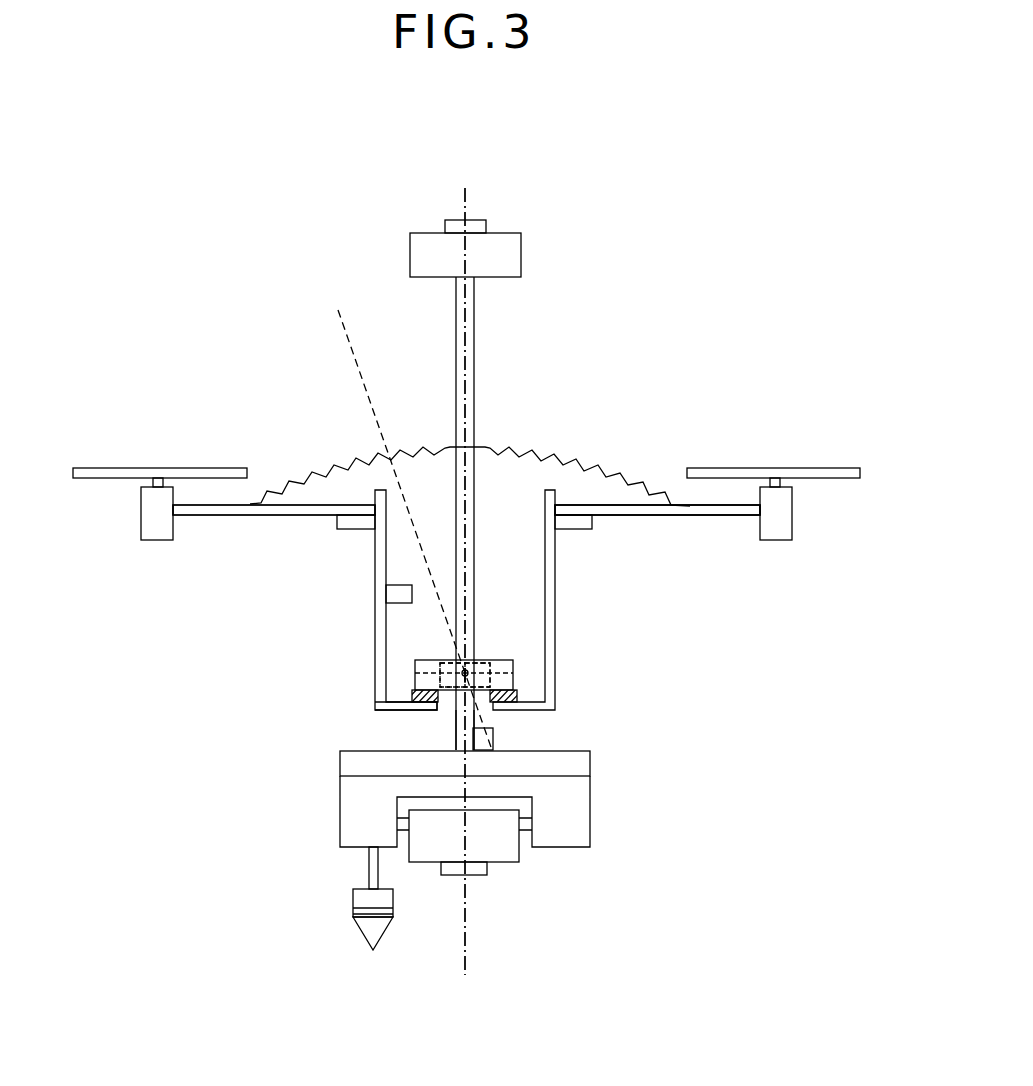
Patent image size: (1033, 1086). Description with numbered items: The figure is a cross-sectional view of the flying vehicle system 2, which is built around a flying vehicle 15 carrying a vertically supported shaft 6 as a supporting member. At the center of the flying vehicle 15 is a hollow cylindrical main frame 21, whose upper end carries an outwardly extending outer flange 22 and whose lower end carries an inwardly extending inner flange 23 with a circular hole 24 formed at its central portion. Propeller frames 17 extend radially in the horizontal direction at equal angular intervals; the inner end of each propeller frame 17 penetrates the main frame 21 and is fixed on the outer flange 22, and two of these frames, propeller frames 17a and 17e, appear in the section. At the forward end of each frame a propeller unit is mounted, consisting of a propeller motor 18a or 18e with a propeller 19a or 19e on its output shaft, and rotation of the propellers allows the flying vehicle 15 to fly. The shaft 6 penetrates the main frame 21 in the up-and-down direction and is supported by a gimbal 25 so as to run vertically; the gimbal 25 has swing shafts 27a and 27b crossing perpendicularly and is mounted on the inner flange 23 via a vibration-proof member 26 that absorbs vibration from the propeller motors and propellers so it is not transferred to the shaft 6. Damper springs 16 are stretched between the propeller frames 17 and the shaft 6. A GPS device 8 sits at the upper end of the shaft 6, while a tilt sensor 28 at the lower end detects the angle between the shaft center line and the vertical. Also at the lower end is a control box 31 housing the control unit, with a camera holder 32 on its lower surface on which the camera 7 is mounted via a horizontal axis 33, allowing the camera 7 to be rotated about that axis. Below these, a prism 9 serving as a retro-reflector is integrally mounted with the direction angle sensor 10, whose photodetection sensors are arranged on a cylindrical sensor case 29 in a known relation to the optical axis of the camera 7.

The flying vehicle system 2 is at (310, 147).
The shaft 6 is at (476, 358).
The camera 7 is at (496, 864).
The GPS device 8 is at (521, 255).
The prism 9 is at (362, 932).
The direction angle sensor 10 is at (352, 900).
The flying vehicle 15 is at (665, 405).
The damper spring 16 is at (330, 472).
The propeller frame 17 is at (730, 517).
The propeller frame 17a is at (220, 516).
The propeller frame 17e is at (681, 518).
The propeller motor 18a is at (160, 541).
The propeller motor 18e is at (792, 517).
The propeller 19a is at (108, 468).
The propeller 19e is at (815, 468).
The main frame 21 is at (555, 625).
The outer flange 22 is at (582, 530).
The inner flange 23 is at (387, 708).
The circular hole 24 is at (445, 712).
The gimbal 25 is at (500, 660).
The vibration-proof member 26 is at (415, 692).
The swing shaft 27a is at (460, 665).
The swing shaft 27b is at (518, 674).
The tilt sensor 28 is at (494, 729).
The sensor case 29 is at (393, 583).
The control box 31 is at (590, 770).
The camera holder 32 is at (590, 830).
The horizontal axis 33 is at (524, 832).